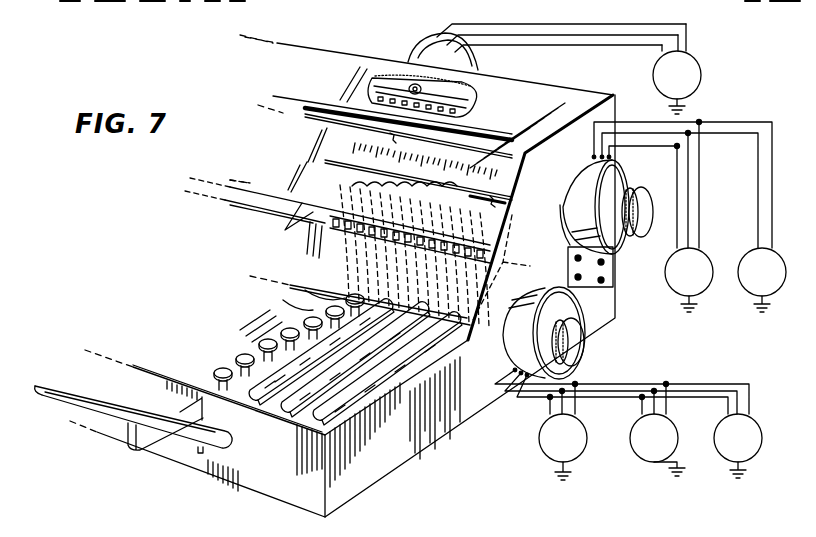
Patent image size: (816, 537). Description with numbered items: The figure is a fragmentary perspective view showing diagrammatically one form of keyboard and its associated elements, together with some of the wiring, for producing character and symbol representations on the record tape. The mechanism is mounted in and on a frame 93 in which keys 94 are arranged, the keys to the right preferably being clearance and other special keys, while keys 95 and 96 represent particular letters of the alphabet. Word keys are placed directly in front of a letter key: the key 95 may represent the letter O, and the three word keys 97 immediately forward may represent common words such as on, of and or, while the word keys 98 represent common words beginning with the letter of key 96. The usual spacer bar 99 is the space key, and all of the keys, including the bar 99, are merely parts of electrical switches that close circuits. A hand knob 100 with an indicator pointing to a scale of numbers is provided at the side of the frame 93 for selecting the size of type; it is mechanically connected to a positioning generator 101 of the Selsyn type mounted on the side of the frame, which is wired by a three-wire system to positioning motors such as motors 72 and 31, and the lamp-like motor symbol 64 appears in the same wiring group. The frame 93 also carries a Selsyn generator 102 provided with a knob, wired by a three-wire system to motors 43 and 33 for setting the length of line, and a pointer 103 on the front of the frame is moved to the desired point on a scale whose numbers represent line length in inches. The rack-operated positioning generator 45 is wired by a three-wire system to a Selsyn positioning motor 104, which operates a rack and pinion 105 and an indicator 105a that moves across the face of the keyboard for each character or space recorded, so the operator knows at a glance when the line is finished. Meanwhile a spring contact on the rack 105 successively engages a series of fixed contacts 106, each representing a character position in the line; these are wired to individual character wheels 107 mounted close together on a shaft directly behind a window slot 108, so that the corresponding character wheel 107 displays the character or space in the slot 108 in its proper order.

The frame 93 is at (383, 463).
The keys 94 is at (272, 417).
The key 95 is at (337, 288).
The key 96 is at (293, 317).
The word keys 97 is at (307, 297).
The word keys 98 is at (219, 366).
The spacer bar 99 is at (183, 436).
The hand knob 100 is at (585, 343).
The positioning generator 101 is at (510, 357).
The Selsyn generator 102 is at (582, 172).
The pointer 103 is at (500, 212).
The Selsyn positioning motor 104 is at (460, 63).
The rack and pinion 105 is at (414, 85).
The indicator 105a is at (390, 136).
The fixed contacts 106 is at (466, 113).
The character wheels 107 is at (370, 190).
The window slot 108 is at (290, 226).
The positioning motor 31 is at (762, 438).
The motor 33 is at (770, 285).
The motor 43 is at (677, 282).
The rack-operated positioning generator 45 is at (697, 68).
The lamp 64 is at (544, 447).
The positioning motor 72 is at (656, 460).